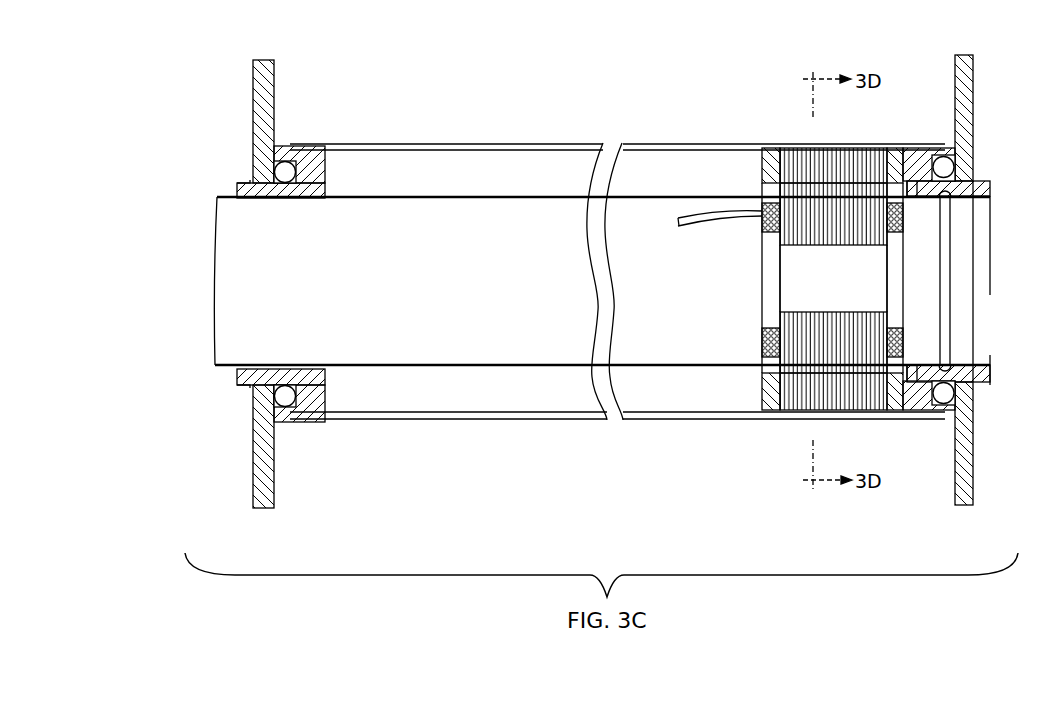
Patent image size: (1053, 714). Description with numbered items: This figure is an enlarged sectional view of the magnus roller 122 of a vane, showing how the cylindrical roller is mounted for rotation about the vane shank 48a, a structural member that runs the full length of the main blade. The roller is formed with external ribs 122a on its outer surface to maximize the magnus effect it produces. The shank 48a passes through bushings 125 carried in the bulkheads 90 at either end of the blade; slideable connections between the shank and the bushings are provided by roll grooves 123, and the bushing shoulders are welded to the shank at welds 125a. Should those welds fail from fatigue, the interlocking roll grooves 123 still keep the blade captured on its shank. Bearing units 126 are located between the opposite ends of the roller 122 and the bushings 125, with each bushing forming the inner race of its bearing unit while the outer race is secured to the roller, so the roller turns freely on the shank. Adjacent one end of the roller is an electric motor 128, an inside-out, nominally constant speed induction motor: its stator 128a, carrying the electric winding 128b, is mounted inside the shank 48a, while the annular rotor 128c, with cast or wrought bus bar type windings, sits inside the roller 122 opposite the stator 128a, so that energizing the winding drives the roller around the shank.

The bulkhead 90 is at (255, 475).
The vane shank 48a is at (385, 370).
The magnus roller 122 is at (410, 80).
The external ribs 122a is at (474, 144).
The roll grooves 123 is at (945, 327).
The bushing 125 is at (262, 198).
The weld 125a is at (253, 177).
The bearing unit 126 is at (328, 163).
The electric motor 128 is at (861, 295).
The stator 128a is at (762, 222).
The electric winding 128b is at (905, 217).
The annular rotor 128c is at (792, 162).